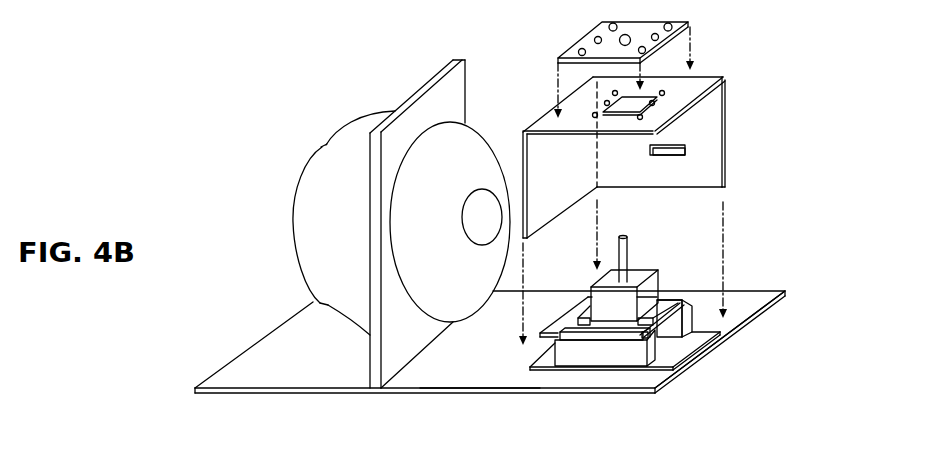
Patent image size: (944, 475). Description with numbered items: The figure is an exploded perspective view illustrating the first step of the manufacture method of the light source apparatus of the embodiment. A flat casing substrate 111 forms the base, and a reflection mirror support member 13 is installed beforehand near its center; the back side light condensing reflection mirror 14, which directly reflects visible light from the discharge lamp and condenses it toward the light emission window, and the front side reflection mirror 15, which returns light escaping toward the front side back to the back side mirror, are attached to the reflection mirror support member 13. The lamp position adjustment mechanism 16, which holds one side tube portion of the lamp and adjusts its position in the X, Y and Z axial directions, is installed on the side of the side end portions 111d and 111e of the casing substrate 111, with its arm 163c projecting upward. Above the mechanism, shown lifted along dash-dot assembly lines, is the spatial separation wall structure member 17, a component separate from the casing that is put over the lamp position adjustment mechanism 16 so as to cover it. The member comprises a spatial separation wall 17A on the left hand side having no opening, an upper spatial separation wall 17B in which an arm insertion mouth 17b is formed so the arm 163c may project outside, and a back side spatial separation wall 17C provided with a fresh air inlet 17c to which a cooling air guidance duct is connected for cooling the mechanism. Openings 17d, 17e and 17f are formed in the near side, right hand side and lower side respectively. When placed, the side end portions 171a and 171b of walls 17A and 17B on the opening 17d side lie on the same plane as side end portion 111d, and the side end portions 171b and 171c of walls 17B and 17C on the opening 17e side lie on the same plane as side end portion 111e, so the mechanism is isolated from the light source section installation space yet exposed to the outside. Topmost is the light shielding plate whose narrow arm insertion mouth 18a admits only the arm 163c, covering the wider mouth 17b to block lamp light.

The reflection mirror support member 13 is at (453, 100).
The back side light condensing reflection mirror 14 is at (473, 133).
The front side reflection mirror 15 is at (326, 306).
The lamp position adjustment mechanism 16 is at (662, 303).
The spatial separation wall structure member 17 is at (663, 197).
The spatial separation wall 17A is at (552, 163).
The spatial separation wall 17B is at (647, 139).
The arm insertion mouth 17b is at (697, 81).
The fresh air inlet 17c is at (686, 149).
The spatial separation wall 17C is at (764, 134).
The opening 17d is at (585, 195).
The opening 17e is at (692, 155).
The opening 17f is at (643, 227).
The arm insertion mouth 18a is at (622, 34).
The casing substrate 111 is at (490, 372).
The side end portion 111d is at (495, 393).
The side end portion 111e is at (697, 366).
The arm 163c is at (628, 264).
The side end portion 171a is at (525, 207).
The side end portion 171b is at (573, 133).
The side end portion 171c is at (725, 152).